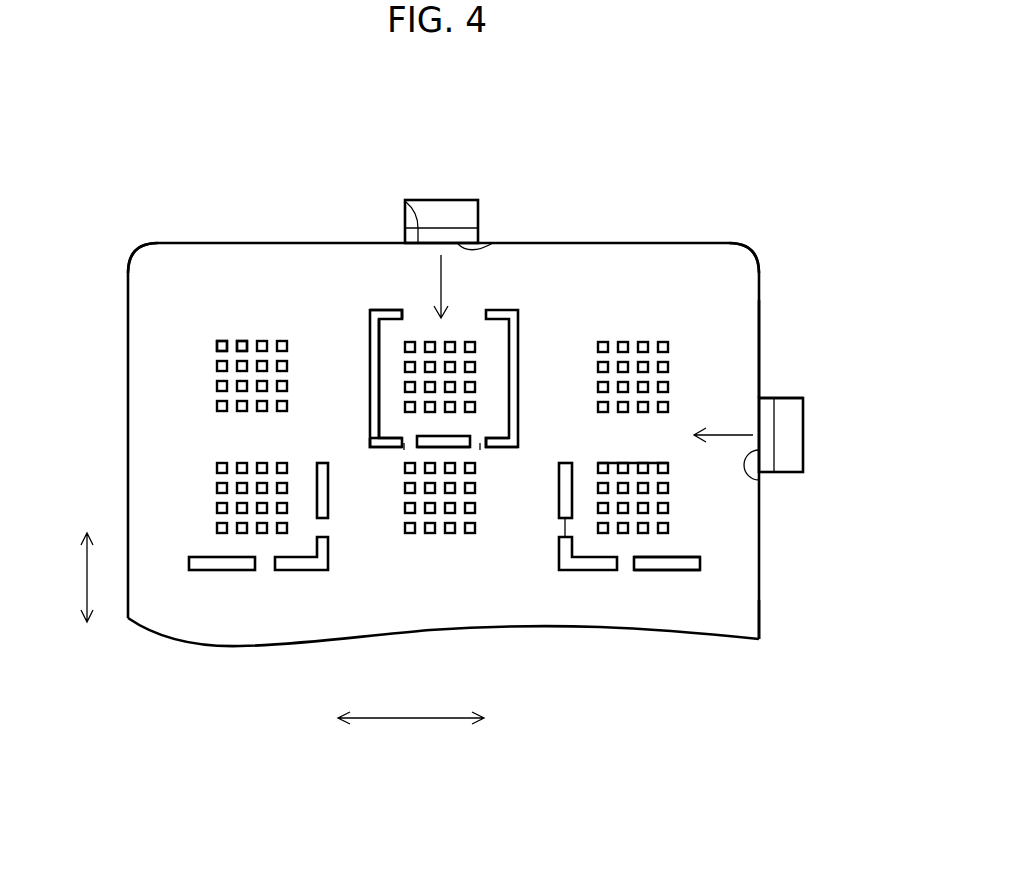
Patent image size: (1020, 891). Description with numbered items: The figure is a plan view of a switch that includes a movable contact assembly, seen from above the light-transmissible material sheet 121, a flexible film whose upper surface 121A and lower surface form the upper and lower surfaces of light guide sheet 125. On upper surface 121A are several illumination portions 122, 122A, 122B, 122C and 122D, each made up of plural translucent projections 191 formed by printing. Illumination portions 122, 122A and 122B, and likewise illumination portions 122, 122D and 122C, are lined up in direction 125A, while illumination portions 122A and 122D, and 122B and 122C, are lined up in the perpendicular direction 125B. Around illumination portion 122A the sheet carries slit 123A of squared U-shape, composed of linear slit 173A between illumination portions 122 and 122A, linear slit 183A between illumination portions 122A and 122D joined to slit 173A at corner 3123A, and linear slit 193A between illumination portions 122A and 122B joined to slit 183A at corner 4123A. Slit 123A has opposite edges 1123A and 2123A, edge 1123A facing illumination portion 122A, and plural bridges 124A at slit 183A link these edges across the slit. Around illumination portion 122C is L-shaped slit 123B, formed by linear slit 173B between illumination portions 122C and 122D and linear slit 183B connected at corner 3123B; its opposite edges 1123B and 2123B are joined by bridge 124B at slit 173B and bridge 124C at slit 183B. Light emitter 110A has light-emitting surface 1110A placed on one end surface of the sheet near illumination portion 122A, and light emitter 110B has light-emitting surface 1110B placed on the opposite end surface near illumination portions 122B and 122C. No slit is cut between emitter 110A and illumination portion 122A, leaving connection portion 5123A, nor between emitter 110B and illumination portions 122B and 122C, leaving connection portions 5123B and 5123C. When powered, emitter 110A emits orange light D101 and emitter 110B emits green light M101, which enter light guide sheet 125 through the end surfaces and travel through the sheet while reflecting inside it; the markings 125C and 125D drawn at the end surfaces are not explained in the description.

The light-transmissible material sheet 121 is at (743, 280).
The upper surface 121A is at (172, 258).
The light guide sheet 125 is at (728, 258).
The light emitter 110A is at (430, 210).
The light-emitting surface 1110A is at (493, 243).
The casing side portion 125C is at (404, 201).
The light D101 is at (440, 280).
The slit 173A is at (370, 353).
The edge 2123A is at (367, 377).
The corner 3123A is at (375, 439).
The connection portion 5123A is at (417, 318).
The slit 193A is at (512, 335).
The corner 4123A is at (513, 430).
The illumination portion 122A is at (458, 340).
The illumination portion 122D is at (457, 523).
The slit 183A is at (427, 447).
The slit 123A is at (437, 447).
The bridges 124A is at (407, 443).
The edge 1123A is at (385, 442).
The illumination portions 122 is at (238, 385).
The projections 191 is at (238, 340).
The direction 125B is at (87, 590).
The direction 125A is at (430, 722).
The slit 173B is at (565, 485).
The illumination portion 122B is at (636, 355).
The illumination portion 122C is at (640, 483).
The corner 3123B is at (558, 568).
The bridge 124B is at (564, 528).
The bridge 124C is at (623, 565).
The slit 183B is at (663, 563).
The edge 1123B is at (668, 557).
The edge 2123B is at (648, 572).
The slit 123B is at (673, 563).
The connection portion 5123C is at (690, 463).
The light emitter 110B is at (793, 445).
The light-emitting surface 1110B is at (760, 483).
The casing side portion 125D is at (762, 421).
The light M101 is at (722, 434).
The connection portion 5123B is at (713, 407).